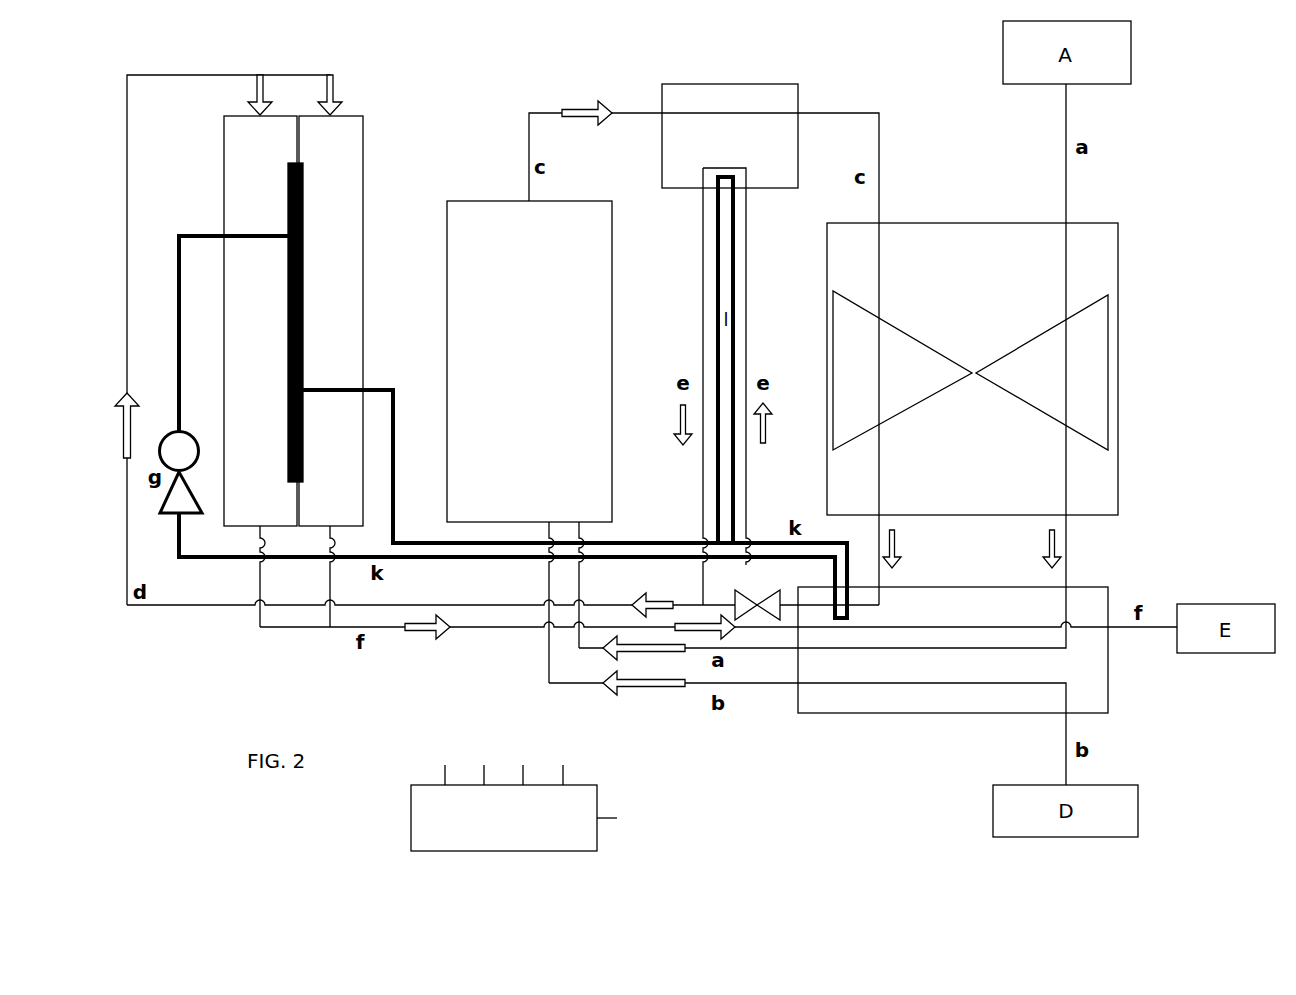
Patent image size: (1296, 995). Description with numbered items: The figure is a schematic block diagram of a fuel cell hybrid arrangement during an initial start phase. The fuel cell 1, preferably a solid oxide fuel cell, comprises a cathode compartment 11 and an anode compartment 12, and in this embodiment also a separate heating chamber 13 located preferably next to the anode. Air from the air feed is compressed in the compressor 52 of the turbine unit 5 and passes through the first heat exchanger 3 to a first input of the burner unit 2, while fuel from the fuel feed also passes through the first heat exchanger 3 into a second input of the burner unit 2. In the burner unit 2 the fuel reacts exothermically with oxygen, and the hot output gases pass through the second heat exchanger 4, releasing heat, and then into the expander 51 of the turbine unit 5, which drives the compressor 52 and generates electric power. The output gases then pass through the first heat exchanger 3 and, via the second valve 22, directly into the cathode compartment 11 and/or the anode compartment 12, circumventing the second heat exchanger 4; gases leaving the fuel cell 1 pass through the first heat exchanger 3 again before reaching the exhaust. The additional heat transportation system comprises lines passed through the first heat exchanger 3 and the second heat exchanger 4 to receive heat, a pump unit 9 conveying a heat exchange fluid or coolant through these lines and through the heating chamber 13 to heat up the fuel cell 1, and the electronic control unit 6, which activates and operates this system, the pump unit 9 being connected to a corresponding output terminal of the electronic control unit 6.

The fuel cell 1 is at (308, 321).
The cathode compartment 11 is at (260, 321).
The anode compartment 12 is at (331, 321).
The heating chamber 13 is at (305, 242).
The burner unit 2 is at (529, 361).
The second valve 22 is at (612, 676).
The first heat exchanger 3 is at (953, 650).
The second heat exchanger 4 is at (730, 136).
The turbine unit 5 is at (972, 369).
The expander 51 is at (902, 370).
The compressor 52 is at (1042, 372).
The electronic control unit 6 is at (504, 818).
The pump unit 9 is at (616, 818).